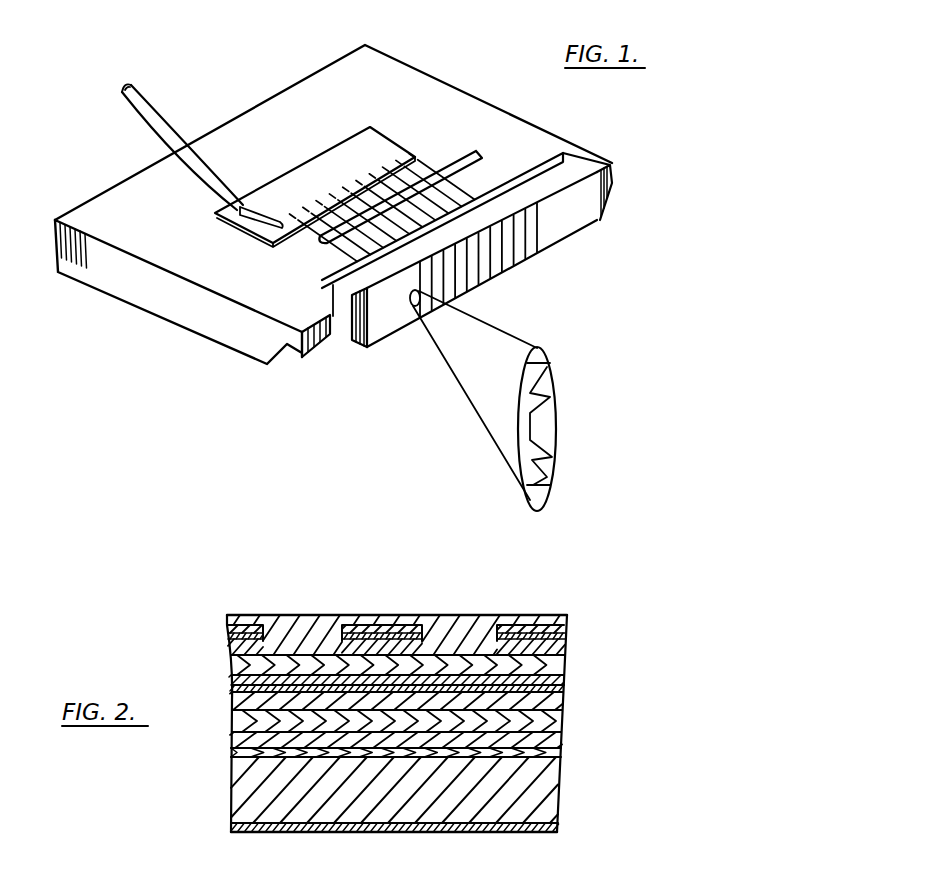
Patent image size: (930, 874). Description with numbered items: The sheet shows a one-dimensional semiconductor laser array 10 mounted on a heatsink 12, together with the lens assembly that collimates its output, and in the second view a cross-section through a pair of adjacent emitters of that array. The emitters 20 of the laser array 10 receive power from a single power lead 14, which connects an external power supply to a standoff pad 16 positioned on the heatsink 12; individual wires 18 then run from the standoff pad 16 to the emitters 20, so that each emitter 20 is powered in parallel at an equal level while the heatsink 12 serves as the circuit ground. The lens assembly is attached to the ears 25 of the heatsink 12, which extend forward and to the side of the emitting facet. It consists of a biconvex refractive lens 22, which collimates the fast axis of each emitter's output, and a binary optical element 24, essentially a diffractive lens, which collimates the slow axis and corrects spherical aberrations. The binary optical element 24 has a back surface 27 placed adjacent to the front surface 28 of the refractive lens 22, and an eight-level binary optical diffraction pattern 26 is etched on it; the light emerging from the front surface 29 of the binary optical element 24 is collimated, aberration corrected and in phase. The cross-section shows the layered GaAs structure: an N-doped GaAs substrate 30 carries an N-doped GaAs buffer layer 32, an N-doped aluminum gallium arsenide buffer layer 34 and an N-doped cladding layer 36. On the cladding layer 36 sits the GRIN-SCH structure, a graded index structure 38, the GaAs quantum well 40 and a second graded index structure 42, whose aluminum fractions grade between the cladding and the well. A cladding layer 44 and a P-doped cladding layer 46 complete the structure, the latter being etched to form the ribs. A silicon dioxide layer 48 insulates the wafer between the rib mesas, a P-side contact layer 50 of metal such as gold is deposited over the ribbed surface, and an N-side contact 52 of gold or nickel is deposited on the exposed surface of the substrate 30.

In FIG. 1, the one-dimensional semiconductor laser array 10 is at (462, 161).
In FIG. 1, the heatsink 12 is at (440, 82).
In FIG. 1, the single power lead 14 is at (150, 127).
In FIG. 1, the standoff pad 16 is at (326, 150).
In FIG. 1, the individual wires 18 is at (427, 163).
In FIG. 1, the emitters 20 is at (480, 175).
In FIG. 1, the refractive lens 22 is at (571, 153).
In FIG. 1, the binary optical element 24 is at (598, 201).
In FIG. 1, the ears 25 is at (293, 347).
In FIG. 1, the binary optical diffraction pattern 26 is at (560, 425).
In FIG. 1, the back surface 27 is at (528, 200).
In FIG. 1, the front surface 28 is at (331, 338).
In FIG. 1, the front surface 29 is at (544, 185).
In FIG. 2, the N-doped GaAs substrate 30 is at (558, 786).
In FIG. 2, the N-doped GaAs buffer layer 32 is at (231, 755).
In FIG. 2, the N-doped Al0.15Ga0.85As buffer layer 34 is at (559, 746).
In FIG. 2, the N-doped Al0.6Ga0.4As cladding layer 36 is at (231, 727).
In FIG. 2, the graded index structure 38 is at (561, 712).
In FIG. 2, the GaAs quantum well 40 is at (232, 695).
In FIG. 2, the second graded index structure 42 is at (564, 686).
In FIG. 2, the Al0.6Ga0.4As cladding layer 44 is at (232, 662).
In FIG. 2, the P-doped Al0.6Ga0.4As cladding layer 46 is at (564, 657).
In FIG. 2, the silicon dioxide layer 48 is at (567, 617).
In FIG. 2, the P-side contact layer 50 is at (375, 613).
In FIG. 2, the N-side contact 52 is at (232, 832).